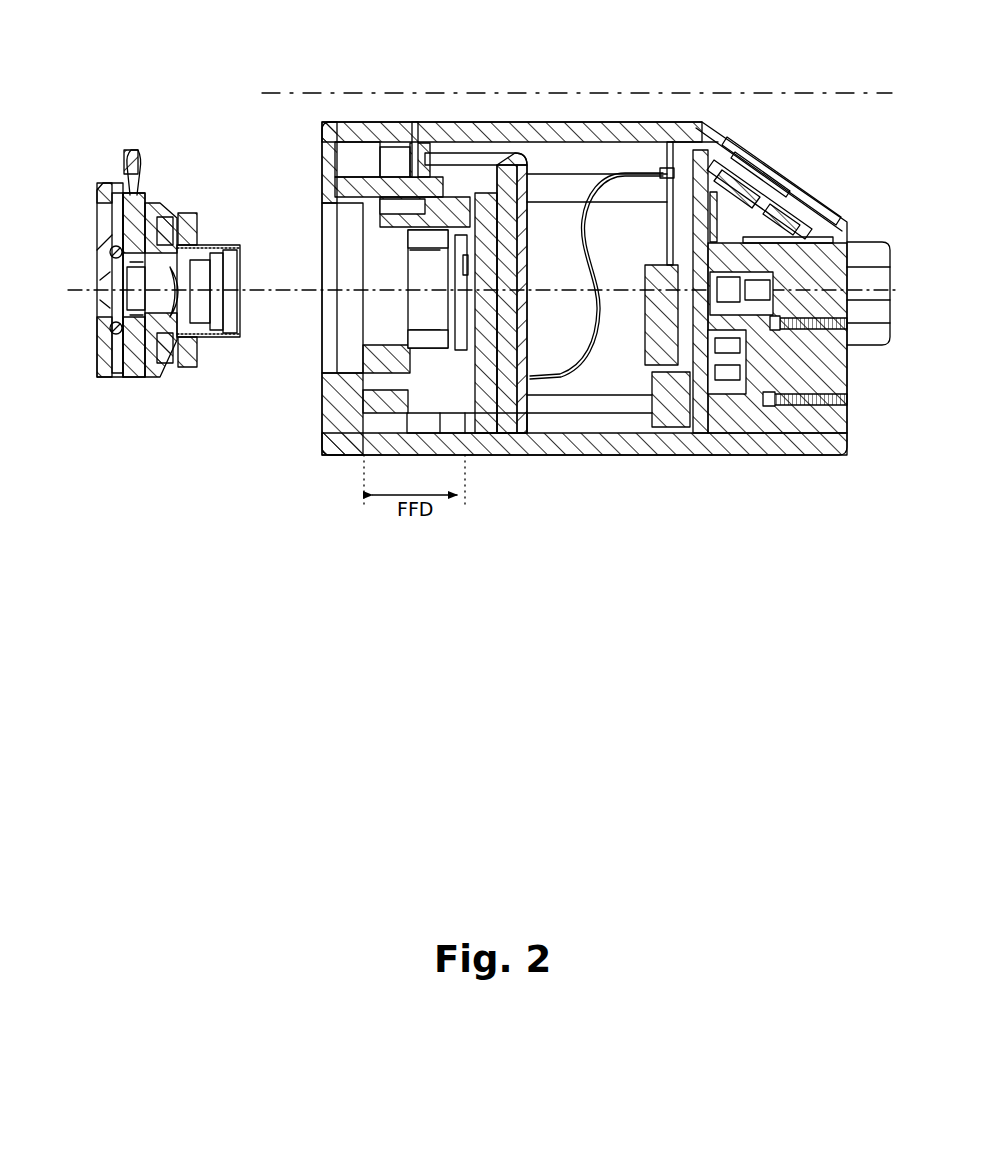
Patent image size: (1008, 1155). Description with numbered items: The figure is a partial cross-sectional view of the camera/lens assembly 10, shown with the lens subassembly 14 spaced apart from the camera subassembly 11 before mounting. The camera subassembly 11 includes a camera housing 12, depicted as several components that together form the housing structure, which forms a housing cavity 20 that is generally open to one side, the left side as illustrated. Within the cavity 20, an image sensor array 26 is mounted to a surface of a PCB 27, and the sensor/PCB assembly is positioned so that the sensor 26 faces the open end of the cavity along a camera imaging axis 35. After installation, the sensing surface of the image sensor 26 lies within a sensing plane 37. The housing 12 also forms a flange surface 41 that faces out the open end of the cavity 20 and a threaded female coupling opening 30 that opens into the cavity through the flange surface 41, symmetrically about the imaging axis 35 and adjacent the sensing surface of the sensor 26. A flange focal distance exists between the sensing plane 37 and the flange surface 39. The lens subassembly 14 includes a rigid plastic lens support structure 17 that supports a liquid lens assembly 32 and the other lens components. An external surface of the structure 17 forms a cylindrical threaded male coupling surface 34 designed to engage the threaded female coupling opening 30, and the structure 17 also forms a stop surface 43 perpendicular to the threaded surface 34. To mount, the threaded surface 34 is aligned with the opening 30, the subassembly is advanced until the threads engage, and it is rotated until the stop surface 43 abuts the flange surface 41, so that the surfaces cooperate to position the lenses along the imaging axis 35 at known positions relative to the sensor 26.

The camera/lens assembly 10 is at (229, 78).
The camera subassembly 11 is at (406, 98).
The camera housing 12 is at (507, 130).
The lens subassembly 14 is at (153, 291).
The lens support structure 17 is at (105, 225).
The housing cavity 20 is at (572, 158).
The image sensor array 26 is at (463, 288).
The PCB 27 is at (480, 333).
The threaded female coupling opening 30 is at (397, 250).
The liquid lens assembly 32 is at (167, 260).
The threaded male coupling surface 34 is at (200, 343).
The camera imaging axis 35 is at (80, 288).
The sensing plane 37 is at (465, 476).
The flange surface 39 is at (364, 478).
The flange surface 41 is at (360, 227).
The stop surface 43 is at (197, 228).